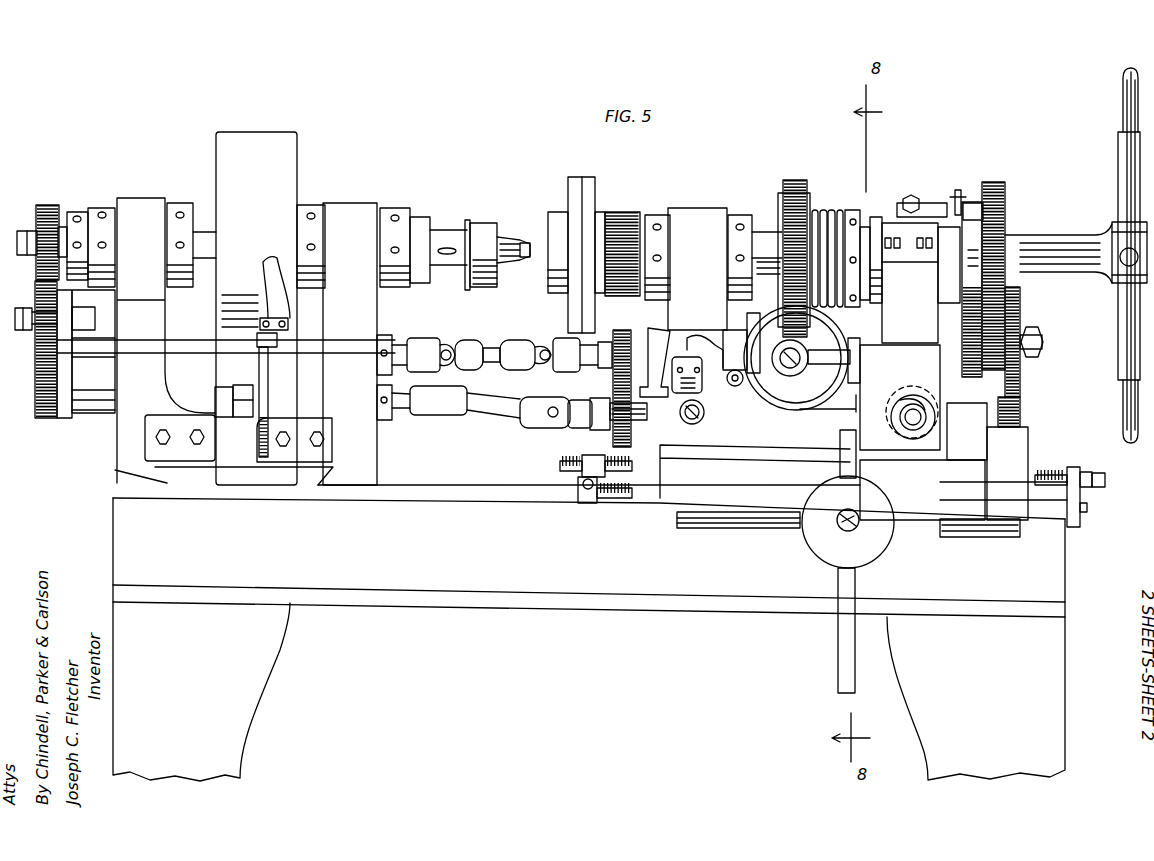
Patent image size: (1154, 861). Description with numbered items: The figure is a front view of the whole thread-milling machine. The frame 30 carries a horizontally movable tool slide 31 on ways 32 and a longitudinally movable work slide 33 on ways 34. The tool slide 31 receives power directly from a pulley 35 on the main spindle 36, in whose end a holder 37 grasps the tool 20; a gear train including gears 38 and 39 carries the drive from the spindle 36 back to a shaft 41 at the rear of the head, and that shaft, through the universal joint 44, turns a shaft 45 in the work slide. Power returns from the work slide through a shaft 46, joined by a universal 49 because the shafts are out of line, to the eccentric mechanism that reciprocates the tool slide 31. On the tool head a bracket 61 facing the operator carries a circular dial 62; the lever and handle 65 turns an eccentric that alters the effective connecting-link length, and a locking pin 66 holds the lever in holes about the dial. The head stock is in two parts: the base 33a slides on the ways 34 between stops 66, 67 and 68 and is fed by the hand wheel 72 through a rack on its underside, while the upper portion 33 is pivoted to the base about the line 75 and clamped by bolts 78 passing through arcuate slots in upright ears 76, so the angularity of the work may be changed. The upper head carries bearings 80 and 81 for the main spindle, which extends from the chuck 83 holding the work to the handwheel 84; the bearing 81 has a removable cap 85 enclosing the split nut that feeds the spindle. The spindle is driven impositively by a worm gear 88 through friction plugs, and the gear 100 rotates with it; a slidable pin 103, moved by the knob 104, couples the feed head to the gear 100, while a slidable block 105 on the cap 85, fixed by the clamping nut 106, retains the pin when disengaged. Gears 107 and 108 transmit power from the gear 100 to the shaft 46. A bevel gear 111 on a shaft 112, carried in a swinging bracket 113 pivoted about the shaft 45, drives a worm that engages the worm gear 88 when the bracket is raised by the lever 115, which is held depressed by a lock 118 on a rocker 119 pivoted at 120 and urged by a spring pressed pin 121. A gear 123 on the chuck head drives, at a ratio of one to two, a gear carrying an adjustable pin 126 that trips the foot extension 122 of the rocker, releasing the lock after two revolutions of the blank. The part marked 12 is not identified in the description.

The roller 12 is at (891, 417).
The tool 20 is at (515, 245).
The frame 30 is at (1058, 582).
The tool slide 31 is at (362, 485).
The ways 32 is at (315, 486).
The work slide 33 is at (787, 440).
The base member 33a is at (928, 522).
The ways 34 is at (978, 522).
The pulley 35 is at (278, 138).
The main shaft 36 is at (203, 232).
The holder 37 is at (50, 205).
The gear 38 is at (35, 338).
The gear 39 is at (46, 418).
The shaft 41 is at (186, 358).
The universal joint 44 is at (491, 340).
The shaft 45 is at (590, 384).
The shaft 46 is at (690, 425).
The universal 49 is at (496, 418).
The bracket 61 is at (255, 440).
The circular dial 62 is at (300, 465).
The lever and handle 65 is at (270, 262).
The locking pin 66 is at (257, 340).
The stop 67 is at (632, 465).
The stop 68 is at (1042, 482).
The hand wheel 72 is at (800, 528).
The pivot line 75 is at (703, 387).
The upright ears 76 is at (912, 388).
The bolts 78 is at (904, 426).
The bearing 80 is at (696, 215).
The bearing 81 is at (900, 381).
The chuck 83 is at (582, 180).
The handwheel 84 is at (1125, 235).
The removable cap 85 is at (887, 258).
The worm gear 88 is at (791, 178).
The gear 100 is at (1006, 231).
The slidable pin 103 is at (1000, 218).
The knob 104 is at (975, 210).
The slidable block 105 is at (956, 205).
The clamping nut 106 is at (911, 198).
The gear 107 is at (1020, 400).
The gear 108 is at (1022, 310).
The bevel gear 111 is at (839, 335).
The shaft 112 is at (811, 377).
The swinging bracket 113 is at (875, 345).
The lever 115 is at (796, 358).
The lock 118 is at (740, 330).
The rocker 119 is at (710, 335).
The pivot 120 is at (760, 398).
The spring pressed pin 121 is at (668, 340).
The foot extension 122 is at (580, 384).
The gear 123 is at (622, 213).
The adjustable pin 126 is at (612, 437).